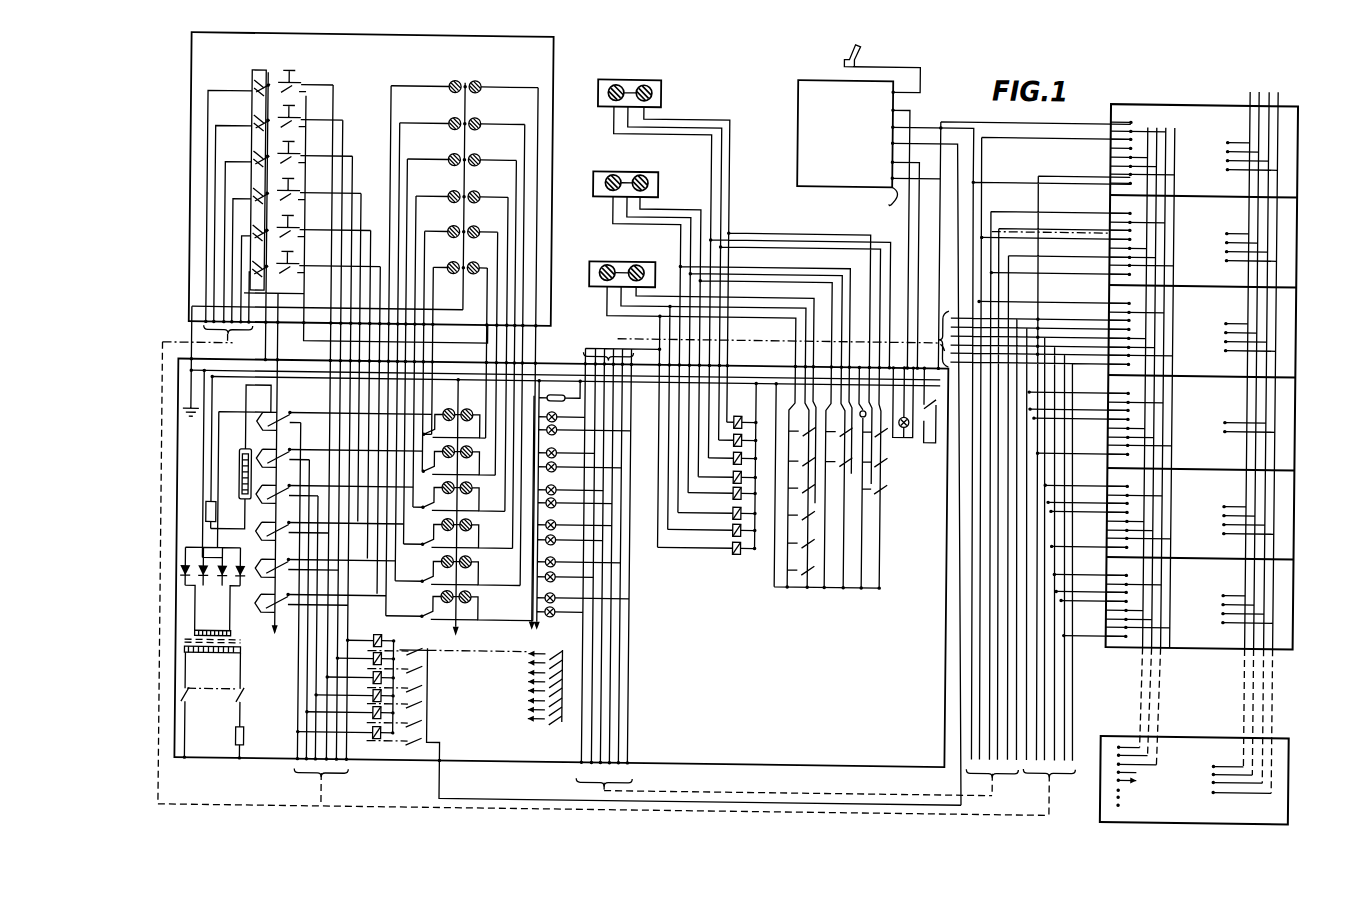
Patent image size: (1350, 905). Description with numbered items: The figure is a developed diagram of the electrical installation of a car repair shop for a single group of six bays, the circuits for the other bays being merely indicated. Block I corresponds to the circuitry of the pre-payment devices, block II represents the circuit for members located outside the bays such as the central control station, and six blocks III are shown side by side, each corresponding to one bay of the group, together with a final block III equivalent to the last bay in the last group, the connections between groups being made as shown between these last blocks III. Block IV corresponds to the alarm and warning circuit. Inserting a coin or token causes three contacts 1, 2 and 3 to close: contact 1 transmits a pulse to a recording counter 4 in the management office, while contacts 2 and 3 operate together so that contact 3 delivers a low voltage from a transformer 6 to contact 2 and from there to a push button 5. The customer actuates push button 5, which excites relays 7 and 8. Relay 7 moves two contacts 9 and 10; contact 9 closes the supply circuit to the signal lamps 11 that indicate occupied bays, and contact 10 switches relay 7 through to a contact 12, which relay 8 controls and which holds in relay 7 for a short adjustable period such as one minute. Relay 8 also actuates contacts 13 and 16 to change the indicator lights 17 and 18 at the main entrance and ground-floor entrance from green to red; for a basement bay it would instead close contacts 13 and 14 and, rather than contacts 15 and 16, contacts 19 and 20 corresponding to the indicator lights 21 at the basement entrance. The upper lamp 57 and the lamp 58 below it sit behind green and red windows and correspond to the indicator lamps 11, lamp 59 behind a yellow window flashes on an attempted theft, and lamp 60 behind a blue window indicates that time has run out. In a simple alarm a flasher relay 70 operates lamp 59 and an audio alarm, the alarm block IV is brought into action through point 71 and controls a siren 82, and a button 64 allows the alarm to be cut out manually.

The contact 1 is at (264, 78).
The contact 2 is at (243, 83).
The contact 3 is at (246, 105).
The recording counter 4 is at (245, 453).
The push button 5 is at (300, 76).
The transformer 6 is at (226, 648).
The relay 7 is at (380, 750).
The relay 8 is at (735, 552).
The contact 9 is at (430, 612).
The contact 10 is at (421, 750).
The signal lamps 11 is at (451, 88).
The contact 12 is at (552, 650).
The contact 13 is at (789, 407).
The contact 14 is at (813, 402).
The contact 15 is at (867, 407).
The contact 16 is at (906, 424).
The indicator lights 17 is at (600, 264).
The indicator lights 18 is at (624, 82).
The contact 19 is at (828, 406).
The contact 20 is at (862, 406).
The indicator lights 21 is at (610, 178).
The upper lamp 57 is at (449, 417).
The lamp 58 is at (468, 417).
The lamp 59 is at (557, 417).
The lamp 60 is at (557, 430).
The button 64 is at (932, 412).
The flasher relay 70 is at (557, 394).
The point 71 is at (882, 198).
The siren 82 is at (840, 55).
The block I is at (514, 64).
The block II is at (896, 755).
The block III is at (1288, 139).
The block IV is at (824, 126).